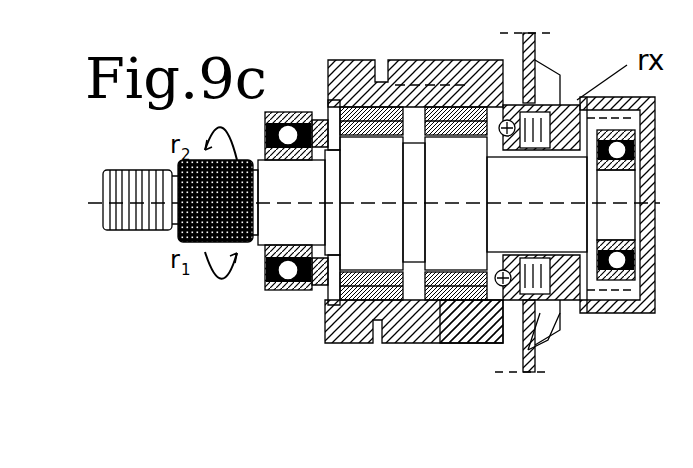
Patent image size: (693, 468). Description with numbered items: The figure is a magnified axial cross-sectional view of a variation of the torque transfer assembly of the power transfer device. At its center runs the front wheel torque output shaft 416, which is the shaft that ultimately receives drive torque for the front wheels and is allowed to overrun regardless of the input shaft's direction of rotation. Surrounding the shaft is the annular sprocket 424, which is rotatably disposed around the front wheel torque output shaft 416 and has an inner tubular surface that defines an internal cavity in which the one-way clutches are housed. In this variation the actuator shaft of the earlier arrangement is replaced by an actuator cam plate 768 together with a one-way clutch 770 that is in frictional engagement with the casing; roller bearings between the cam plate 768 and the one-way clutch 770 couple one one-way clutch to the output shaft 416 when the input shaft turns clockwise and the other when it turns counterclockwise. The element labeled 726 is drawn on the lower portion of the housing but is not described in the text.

The front wheel torque output shaft 416 is at (127, 230).
The annular sprocket 424 is at (352, 70).
The actuator cam plate 768 is at (480, 97).
The lower housing body 726 is at (472, 345).
The one-way clutch 770 is at (540, 317).